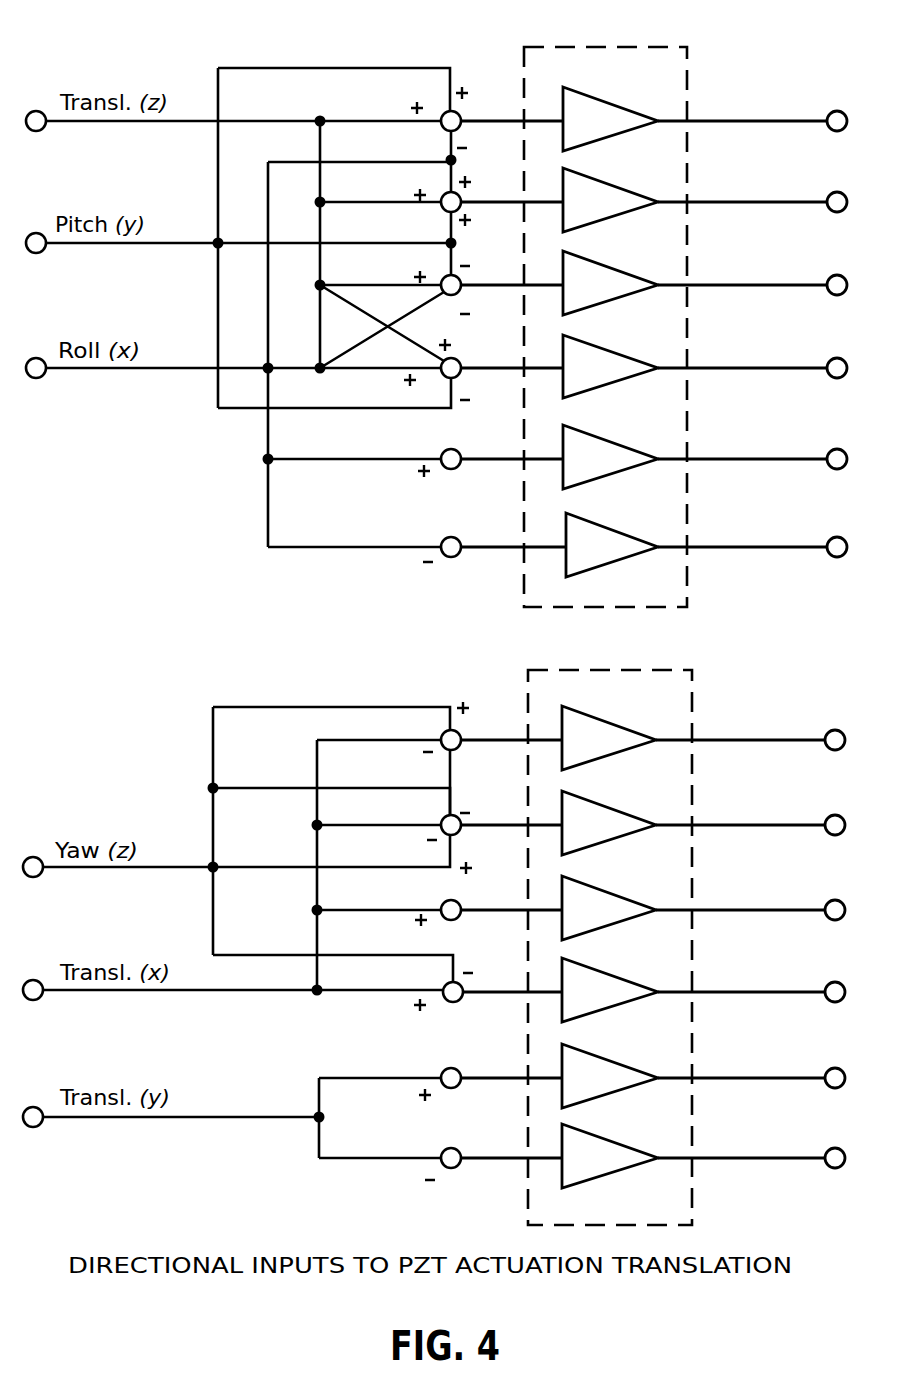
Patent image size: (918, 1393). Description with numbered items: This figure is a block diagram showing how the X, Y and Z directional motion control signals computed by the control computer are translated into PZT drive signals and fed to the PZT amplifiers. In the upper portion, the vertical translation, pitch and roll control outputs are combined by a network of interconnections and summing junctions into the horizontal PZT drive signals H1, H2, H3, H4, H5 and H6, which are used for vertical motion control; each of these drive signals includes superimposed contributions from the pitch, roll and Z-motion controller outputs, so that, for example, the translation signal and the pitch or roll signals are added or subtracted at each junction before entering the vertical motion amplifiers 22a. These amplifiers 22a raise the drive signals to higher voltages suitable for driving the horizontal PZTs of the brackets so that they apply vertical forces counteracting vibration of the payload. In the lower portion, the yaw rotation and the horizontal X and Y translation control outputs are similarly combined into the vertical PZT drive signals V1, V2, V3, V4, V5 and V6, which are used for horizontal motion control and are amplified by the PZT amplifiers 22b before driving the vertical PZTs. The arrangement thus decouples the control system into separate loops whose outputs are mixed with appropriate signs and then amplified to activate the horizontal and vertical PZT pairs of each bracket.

The vertical motion amplifiers 22a is at (654, 305).
The PZT amplifiers 22b is at (653, 928).
The horizontal PZT drive signal H1 is at (752, 109).
The horizontal PZT drive signal H2 is at (752, 191).
The horizontal PZT drive signal H3 is at (752, 274).
The horizontal PZT drive signal H4 is at (752, 357).
The horizontal PZT drive signal H5 is at (752, 447).
The horizontal PZT drive signal H6 is at (752, 536).
The vertical PZT drive signal V1 is at (750, 729).
The vertical PZT drive signal V2 is at (750, 814).
The vertical PZT drive signal V3 is at (750, 899).
The vertical PZT drive signal V4 is at (751, 981).
The vertical PZT drive signal V5 is at (751, 1066).
The vertical PZT drive signal V6 is at (751, 1146).